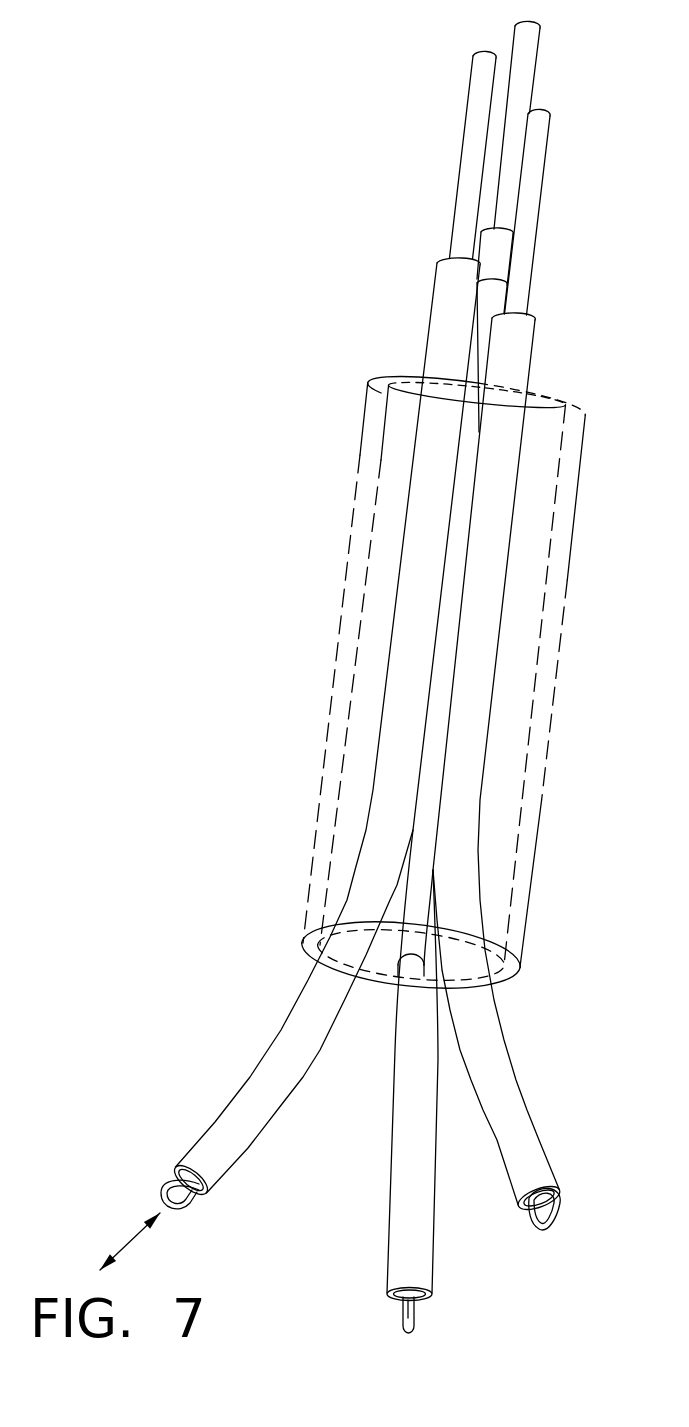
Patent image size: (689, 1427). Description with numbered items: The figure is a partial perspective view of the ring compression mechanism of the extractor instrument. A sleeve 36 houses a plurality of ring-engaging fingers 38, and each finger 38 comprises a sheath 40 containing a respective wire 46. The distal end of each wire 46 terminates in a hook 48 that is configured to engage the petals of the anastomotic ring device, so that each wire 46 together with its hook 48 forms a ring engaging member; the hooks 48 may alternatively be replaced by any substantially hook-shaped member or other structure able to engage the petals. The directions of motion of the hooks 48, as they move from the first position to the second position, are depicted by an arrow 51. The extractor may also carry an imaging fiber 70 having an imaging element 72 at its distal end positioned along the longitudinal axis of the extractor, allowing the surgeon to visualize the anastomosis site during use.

The sleeve 36 is at (352, 537).
The ring-engaging fingers 38 is at (506, 1136).
The sheath 40 is at (213, 1122).
The wire 46 is at (467, 131).
The hook 48 is at (160, 1193).
The arrow 51 is at (132, 1240).
The imaging fiber 70 is at (493, 293).
The imaging element 72 is at (413, 976).